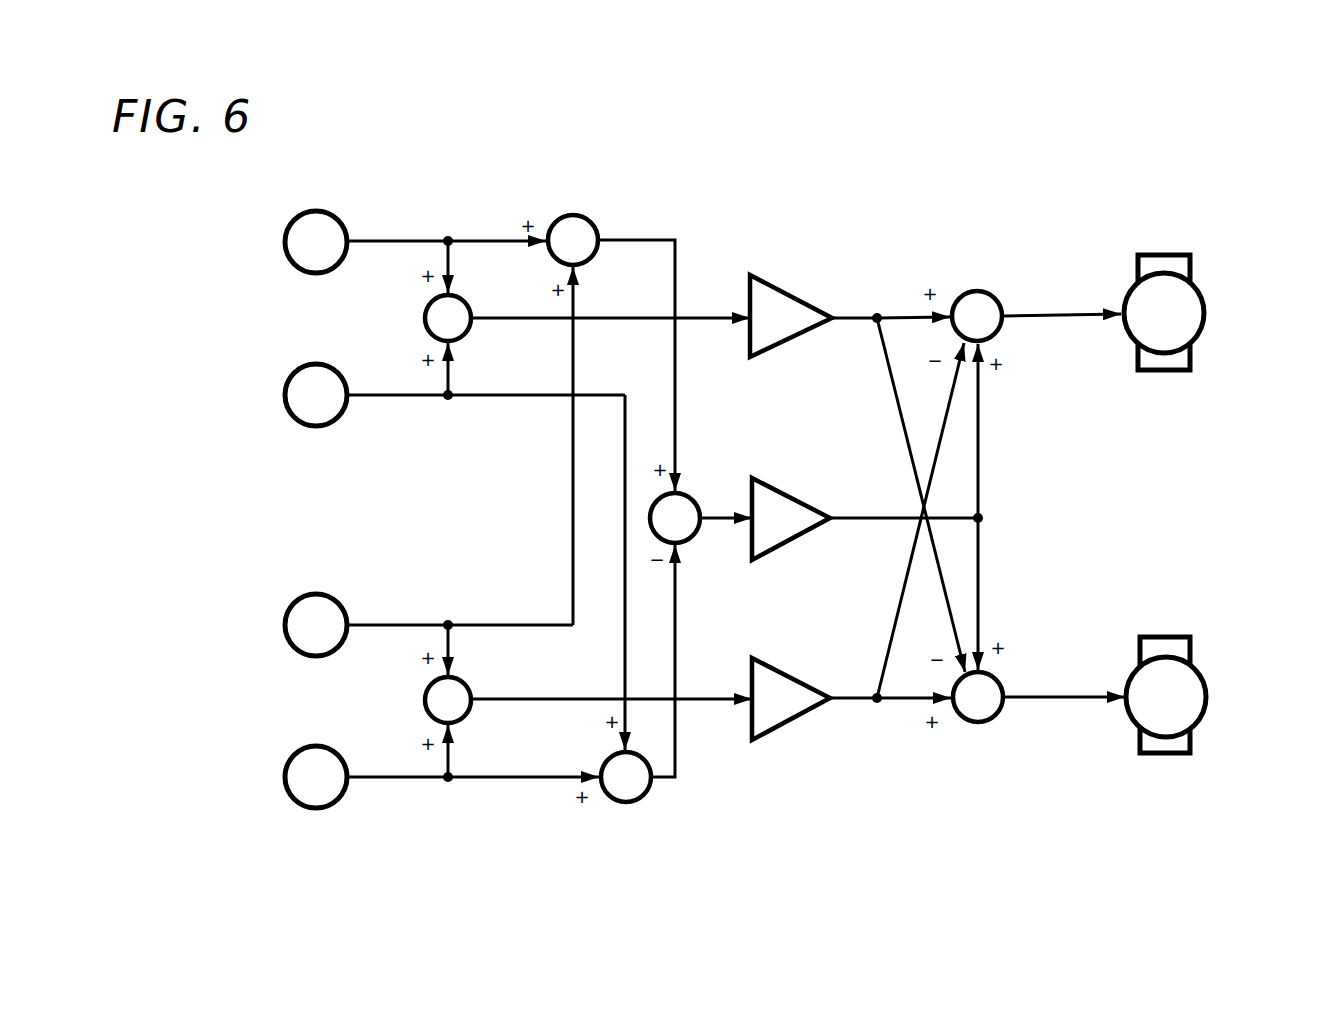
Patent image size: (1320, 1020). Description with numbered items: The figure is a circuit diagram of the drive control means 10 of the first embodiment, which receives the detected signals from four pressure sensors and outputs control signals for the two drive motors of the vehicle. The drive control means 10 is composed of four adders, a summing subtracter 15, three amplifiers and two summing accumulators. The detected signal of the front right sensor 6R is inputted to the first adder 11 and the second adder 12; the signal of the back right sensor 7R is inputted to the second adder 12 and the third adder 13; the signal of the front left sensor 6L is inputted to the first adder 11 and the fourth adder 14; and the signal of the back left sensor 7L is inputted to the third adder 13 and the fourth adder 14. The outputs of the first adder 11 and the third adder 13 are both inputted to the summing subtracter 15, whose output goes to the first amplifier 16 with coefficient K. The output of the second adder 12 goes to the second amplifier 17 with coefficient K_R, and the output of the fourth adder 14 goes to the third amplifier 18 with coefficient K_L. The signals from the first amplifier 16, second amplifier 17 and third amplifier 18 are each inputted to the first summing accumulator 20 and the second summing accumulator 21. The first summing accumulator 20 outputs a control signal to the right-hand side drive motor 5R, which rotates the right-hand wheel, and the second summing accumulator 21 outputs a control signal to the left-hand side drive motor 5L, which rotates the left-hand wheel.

The right-hand side drive motor 5R is at (1206, 313).
The left-hand side drive motor 5L is at (1208, 697).
The front right sensor 6R is at (316, 209).
The front left sensor 6L is at (316, 592).
The back right sensor 7R is at (316, 362).
The back left sensor 7L is at (316, 744).
The drive control means 10 is at (1036, 262).
The first adder 11 is at (573, 213).
The second adder 12 is at (423, 318).
The third adder 13 is at (626, 804).
The fourth adder 14 is at (423, 700).
The summing subtracter 15 is at (693, 536).
The first amplifier 16 is at (790, 491).
The second amplifier 17 is at (788, 288).
The third amplifier 18 is at (790, 670).
The first summing accumulator 20 is at (995, 334).
The second summing accumulator 21 is at (978, 724).